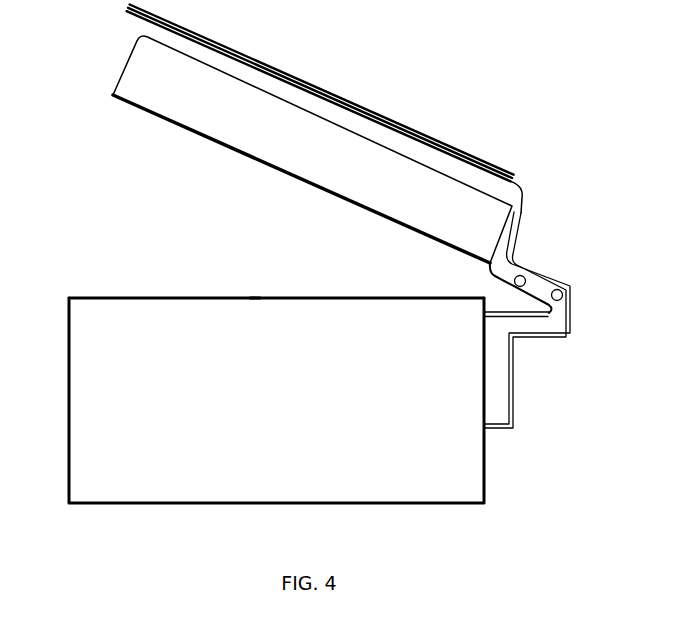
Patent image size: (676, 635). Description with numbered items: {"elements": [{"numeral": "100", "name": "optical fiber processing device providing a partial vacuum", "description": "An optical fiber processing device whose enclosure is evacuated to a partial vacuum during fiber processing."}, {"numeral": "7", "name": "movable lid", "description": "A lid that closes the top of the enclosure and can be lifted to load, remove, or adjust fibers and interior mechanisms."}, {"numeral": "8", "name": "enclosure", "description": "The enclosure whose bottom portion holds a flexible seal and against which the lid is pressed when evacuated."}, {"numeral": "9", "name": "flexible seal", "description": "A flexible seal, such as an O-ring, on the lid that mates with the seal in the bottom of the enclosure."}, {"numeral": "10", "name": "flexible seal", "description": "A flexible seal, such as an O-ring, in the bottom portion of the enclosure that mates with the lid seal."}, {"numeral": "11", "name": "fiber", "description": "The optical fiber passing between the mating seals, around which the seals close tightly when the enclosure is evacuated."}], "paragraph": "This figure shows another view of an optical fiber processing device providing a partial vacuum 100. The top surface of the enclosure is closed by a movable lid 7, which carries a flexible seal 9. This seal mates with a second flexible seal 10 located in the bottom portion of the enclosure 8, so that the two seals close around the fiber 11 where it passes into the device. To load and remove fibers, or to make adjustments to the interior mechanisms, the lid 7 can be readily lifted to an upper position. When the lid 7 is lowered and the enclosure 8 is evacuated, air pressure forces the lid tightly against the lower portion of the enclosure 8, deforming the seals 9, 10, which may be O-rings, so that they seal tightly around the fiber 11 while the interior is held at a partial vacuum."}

The container assembly 100 is at (533, 80).
The lid 7 is at (294, 134).
The container body 8 is at (276, 353).
The lid lower edge 9 is at (144, 121).
The container top edge 10 is at (135, 294).
The container rim 11 is at (227, 297).